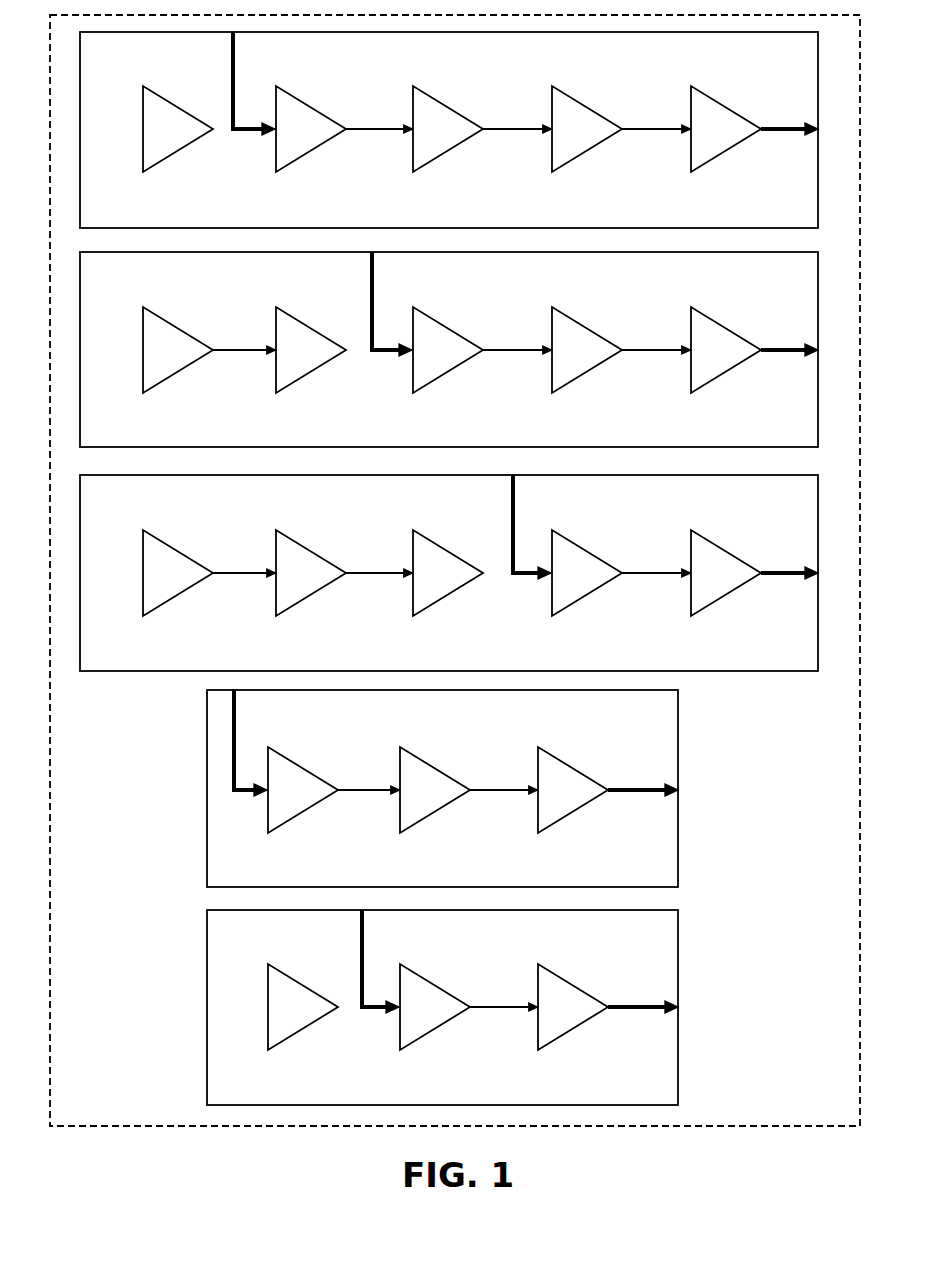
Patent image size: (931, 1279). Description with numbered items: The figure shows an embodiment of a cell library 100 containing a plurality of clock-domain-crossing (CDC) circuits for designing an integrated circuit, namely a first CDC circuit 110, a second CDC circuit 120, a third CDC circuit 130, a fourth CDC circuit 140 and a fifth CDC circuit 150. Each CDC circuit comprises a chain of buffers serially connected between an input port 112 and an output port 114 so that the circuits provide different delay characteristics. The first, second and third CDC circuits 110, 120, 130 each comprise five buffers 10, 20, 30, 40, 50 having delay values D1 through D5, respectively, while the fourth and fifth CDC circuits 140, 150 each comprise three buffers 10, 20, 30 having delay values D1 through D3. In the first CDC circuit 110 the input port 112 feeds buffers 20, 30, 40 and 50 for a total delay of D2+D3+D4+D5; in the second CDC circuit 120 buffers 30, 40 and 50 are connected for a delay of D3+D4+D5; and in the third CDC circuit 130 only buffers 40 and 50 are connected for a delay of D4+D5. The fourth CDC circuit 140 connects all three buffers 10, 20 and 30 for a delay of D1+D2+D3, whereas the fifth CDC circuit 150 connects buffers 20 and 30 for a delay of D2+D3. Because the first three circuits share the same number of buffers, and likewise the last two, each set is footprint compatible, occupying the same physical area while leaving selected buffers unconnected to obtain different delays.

The cell library 100 is at (455, 570).
The first CDC circuit 110 is at (123, 214).
The second CDC circuit 120 is at (123, 433).
The third CDC circuit 130 is at (123, 657).
The fourth CDC circuit 140 is at (248, 875).
The fifth CDC circuit 150 is at (248, 1092).
The buffer 10 is at (180, 150).
The buffer 20 is at (313, 150).
The buffer 30 is at (450, 150).
The buffer 40 is at (589, 150).
The buffer 50 is at (728, 150).
The input port 112 is at (220, 41).
The output port 114 is at (800, 114).